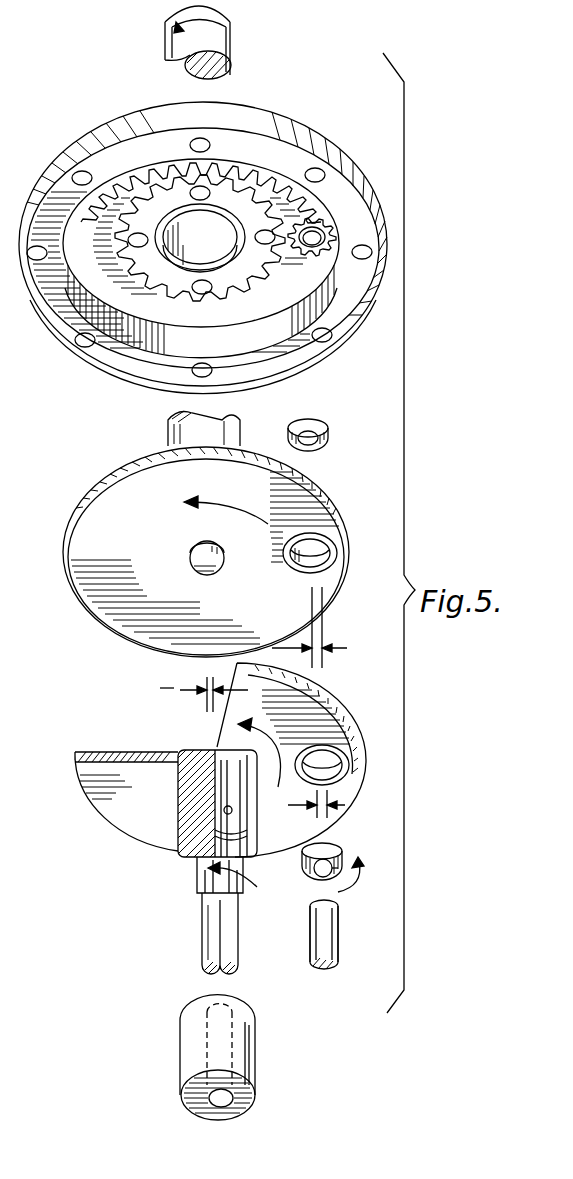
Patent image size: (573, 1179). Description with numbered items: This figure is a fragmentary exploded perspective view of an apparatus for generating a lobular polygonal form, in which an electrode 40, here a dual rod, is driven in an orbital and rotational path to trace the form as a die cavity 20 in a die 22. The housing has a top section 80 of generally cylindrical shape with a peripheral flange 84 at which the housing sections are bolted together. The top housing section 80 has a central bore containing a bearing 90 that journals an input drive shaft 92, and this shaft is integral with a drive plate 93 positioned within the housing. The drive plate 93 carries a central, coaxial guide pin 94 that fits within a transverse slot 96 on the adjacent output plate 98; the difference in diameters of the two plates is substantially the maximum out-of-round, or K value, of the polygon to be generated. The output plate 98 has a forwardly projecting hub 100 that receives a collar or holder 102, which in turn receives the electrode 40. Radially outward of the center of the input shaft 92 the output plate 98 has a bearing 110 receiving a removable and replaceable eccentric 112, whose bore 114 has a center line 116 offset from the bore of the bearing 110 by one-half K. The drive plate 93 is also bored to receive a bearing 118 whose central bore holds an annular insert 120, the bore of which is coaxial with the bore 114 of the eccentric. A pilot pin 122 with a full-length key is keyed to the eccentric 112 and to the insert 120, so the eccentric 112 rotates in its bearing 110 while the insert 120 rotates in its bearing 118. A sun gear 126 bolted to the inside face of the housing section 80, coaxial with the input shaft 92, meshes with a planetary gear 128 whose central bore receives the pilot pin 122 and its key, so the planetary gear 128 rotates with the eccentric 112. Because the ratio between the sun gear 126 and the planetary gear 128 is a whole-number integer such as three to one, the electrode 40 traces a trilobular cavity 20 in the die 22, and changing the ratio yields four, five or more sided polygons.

The die cavity 20 is at (228, 1101).
The die 22 is at (182, 1088).
The electrode 40 is at (202, 938).
The top housing section 80 is at (285, 118).
The peripheral flange 84 is at (362, 318).
The bearing 90 is at (262, 272).
The input drive shaft 92 is at (236, 42).
The drive plate 93 is at (80, 502).
The guide pin 94 is at (190, 560).
The transverse slot 96 is at (183, 748).
The output plate 98 is at (95, 790).
The hub 100 is at (178, 860).
The holder 102 is at (195, 883).
The bearing 110 is at (346, 718).
The eccentric 112 is at (304, 876).
The bore 114 is at (338, 856).
The center line 116 is at (314, 824).
The bearing 118 is at (332, 570).
The insert 120 is at (321, 420).
The pilot pin 122 is at (356, 955).
The sun gear 126 is at (132, 190).
The planetary gear 128 is at (335, 157).